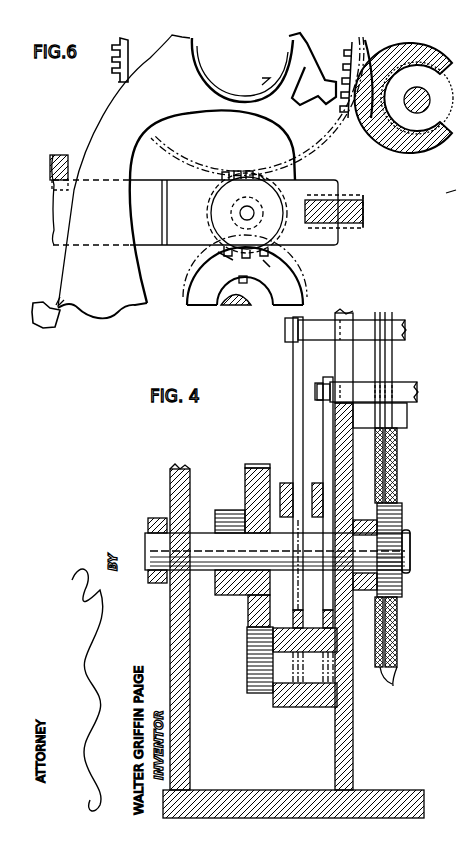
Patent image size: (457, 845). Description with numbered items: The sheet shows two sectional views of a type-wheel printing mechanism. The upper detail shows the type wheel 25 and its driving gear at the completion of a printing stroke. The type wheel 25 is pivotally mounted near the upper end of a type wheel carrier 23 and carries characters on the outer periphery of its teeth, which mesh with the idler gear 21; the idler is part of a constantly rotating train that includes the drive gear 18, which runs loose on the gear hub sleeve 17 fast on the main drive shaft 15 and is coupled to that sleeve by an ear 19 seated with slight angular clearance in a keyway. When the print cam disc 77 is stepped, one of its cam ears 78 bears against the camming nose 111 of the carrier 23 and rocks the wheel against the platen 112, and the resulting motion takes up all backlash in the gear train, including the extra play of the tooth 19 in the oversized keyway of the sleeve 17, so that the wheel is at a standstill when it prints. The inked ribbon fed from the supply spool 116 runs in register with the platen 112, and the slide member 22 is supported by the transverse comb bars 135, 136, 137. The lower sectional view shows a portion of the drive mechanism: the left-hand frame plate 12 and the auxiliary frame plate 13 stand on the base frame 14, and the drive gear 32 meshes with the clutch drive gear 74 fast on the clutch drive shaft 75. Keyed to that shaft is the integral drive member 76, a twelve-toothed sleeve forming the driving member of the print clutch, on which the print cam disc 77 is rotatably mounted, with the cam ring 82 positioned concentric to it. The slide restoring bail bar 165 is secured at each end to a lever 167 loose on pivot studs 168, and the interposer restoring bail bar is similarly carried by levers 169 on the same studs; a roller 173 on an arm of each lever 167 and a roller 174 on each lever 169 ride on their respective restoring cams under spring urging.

In FIG. 4, the left-hand frame plate 12 is at (353, 733).
In FIG. 6, the auxiliary frame plate 13 is at (427, 107).
In FIG. 4, the auxiliary frame plate 13 is at (190, 729).
In FIG. 4, the base frame 14 is at (400, 800).
In FIG. 6, the main drive shaft 15 is at (233, 305).
In FIG. 6, the gear hub sleeve 17 is at (258, 298).
In FIG. 6, the drive gear 18 is at (280, 288).
In FIG. 6, the ear 19 is at (217, 260).
In FIG. 6, the idler gear 21 is at (265, 248).
In FIG. 6, the slide member 22 is at (330, 236).
In FIG. 4, the slide member 22 is at (390, 360).
In FIG. 6, the type wheel carrier 23 is at (147, 308).
In FIG. 6, the type wheel 25 is at (315, 135).
In FIG. 4, the drive gear 32 is at (247, 672).
In FIG. 4, the clutch drive gear 74 is at (247, 468).
In FIG. 4, the clutch drive shaft 75 is at (202, 537).
In FIG. 4, the integral drive member 76 is at (404, 517).
In FIG. 6, the print cam disc 77 is at (42, 327).
In FIG. 4, the print cam disc 77 is at (394, 682).
In FIG. 6, the cam ear 78 is at (53, 303).
In FIG. 4, the cam ring 82 is at (397, 450).
In FIG. 6, the camming nose 111 is at (65, 303).
In FIG. 6, the platen 112 is at (413, 152).
In FIG. 6, the supply spool 116 is at (446, 193).
In FIG. 6, the comb bar 135 is at (363, 217).
In FIG. 6, the comb bar 136 is at (60, 153).
In FIG. 4, the comb bar 137 is at (397, 415).
In FIG. 4, the slide restoring bail bar 165 is at (410, 382).
In FIG. 4, the slide bail lever 167 is at (328, 376).
In FIG. 4, the pivot stud 168 is at (403, 325).
In FIG. 4, the interposer bail lever 169 is at (293, 372).
In FIG. 4, the roller 173 is at (317, 483).
In FIG. 4, the roller 174 is at (287, 483).